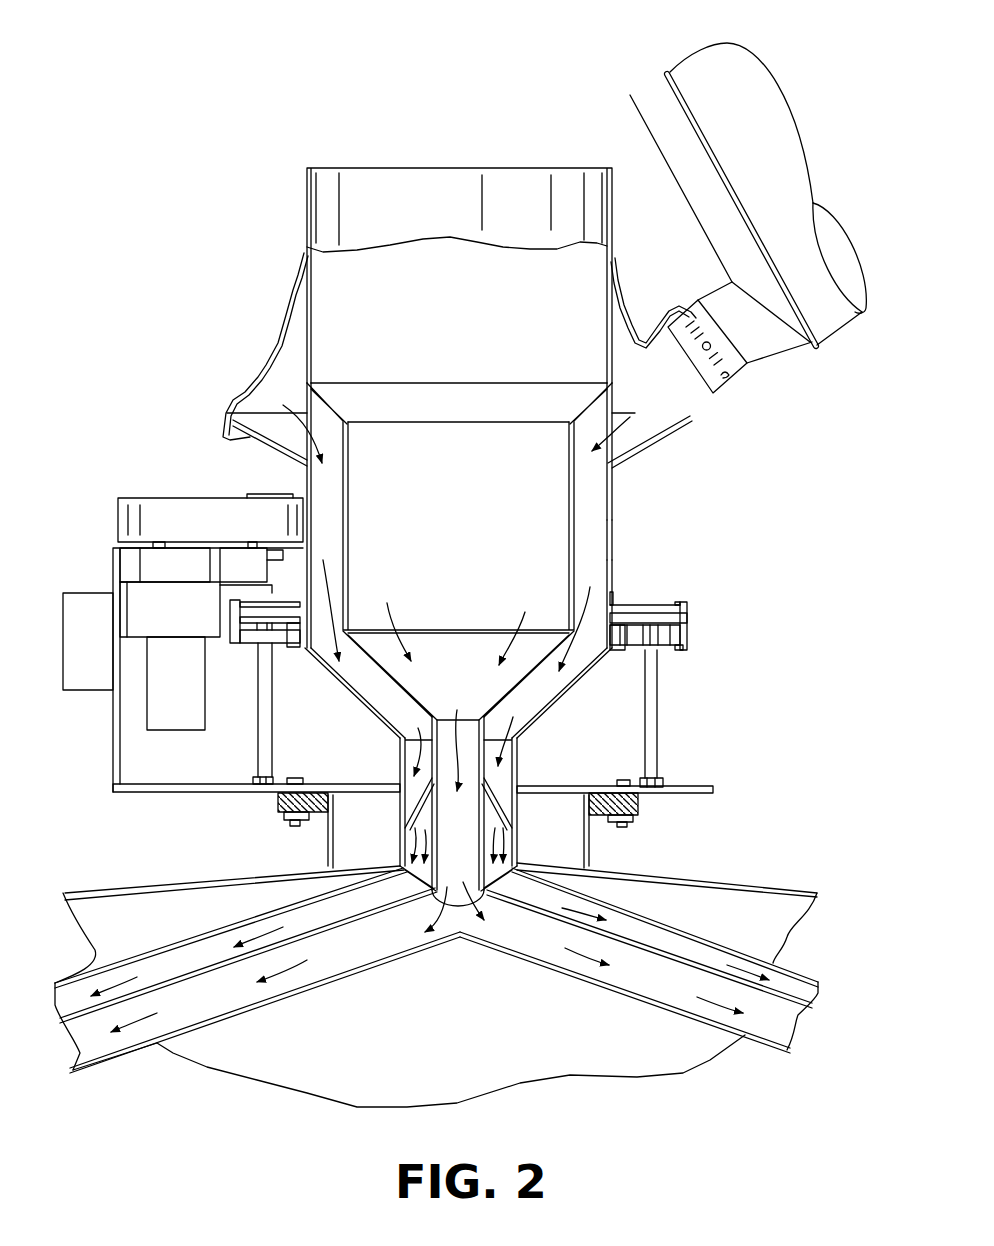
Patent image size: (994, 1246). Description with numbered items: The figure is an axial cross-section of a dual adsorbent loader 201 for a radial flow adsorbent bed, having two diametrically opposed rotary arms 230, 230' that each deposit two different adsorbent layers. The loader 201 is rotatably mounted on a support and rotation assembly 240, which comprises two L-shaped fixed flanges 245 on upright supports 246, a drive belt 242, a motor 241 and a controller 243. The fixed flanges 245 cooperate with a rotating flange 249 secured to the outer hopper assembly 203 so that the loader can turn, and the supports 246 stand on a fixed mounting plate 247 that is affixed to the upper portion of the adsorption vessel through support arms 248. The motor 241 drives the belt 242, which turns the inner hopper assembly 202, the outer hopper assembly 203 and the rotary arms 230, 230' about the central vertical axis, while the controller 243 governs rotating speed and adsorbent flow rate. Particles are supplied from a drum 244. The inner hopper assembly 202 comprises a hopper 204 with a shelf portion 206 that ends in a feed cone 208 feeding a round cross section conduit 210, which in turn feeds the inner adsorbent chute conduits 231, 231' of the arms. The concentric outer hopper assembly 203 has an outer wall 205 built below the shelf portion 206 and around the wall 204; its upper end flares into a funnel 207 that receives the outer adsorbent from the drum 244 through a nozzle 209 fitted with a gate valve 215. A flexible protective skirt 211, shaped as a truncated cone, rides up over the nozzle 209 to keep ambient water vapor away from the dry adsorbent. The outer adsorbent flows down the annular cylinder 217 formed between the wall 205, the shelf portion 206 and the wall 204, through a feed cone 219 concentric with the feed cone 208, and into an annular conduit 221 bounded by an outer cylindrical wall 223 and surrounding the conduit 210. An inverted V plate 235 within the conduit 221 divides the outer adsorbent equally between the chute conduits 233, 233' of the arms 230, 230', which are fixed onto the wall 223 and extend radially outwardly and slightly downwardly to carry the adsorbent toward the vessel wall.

The dual adsorbent loader 201 is at (280, 208).
The inner hopper assembly 202 is at (341, 163).
The outer hopper assembly 203 is at (604, 505).
The hopper 204 is at (336, 518).
The outer wall 205 is at (610, 540).
The shelf portion 206 is at (336, 407).
The funnel 207 is at (640, 432).
The feed cone 208 is at (475, 688).
The nozzle 209 is at (757, 350).
The round cross section conduit 210 is at (459, 938).
The flexible protective skirt 211 is at (283, 322).
The gate valve 215 is at (715, 394).
The annular cylinder 217 is at (580, 567).
The feed cone 219 is at (554, 710).
The annular conduit 221 is at (500, 783).
The outer cylindrical wall 223 is at (517, 848).
The rotary arm 230 is at (652, 970).
The rotary arm 230' is at (400, 1000).
The inner adsorbent chute conduit 231 is at (625, 1012).
The inner adsorbent chute conduit 231' is at (265, 1002).
The chute conduit 233 is at (665, 927).
The chute conduit 233' is at (231, 928).
The inverted V plate 235 is at (417, 797).
The support and rotation assembly 240 is at (118, 565).
The motor 241 is at (167, 713).
The drive belt 242 is at (150, 510).
The controller 243 is at (68, 622).
The drum 244 is at (738, 62).
The L-shaped fixed flange 245 is at (688, 640).
The upright support 246 is at (273, 735).
The fixed mounting plate 247 is at (682, 794).
The support arm 248 is at (767, 883).
The rotating flange 249 is at (614, 603).